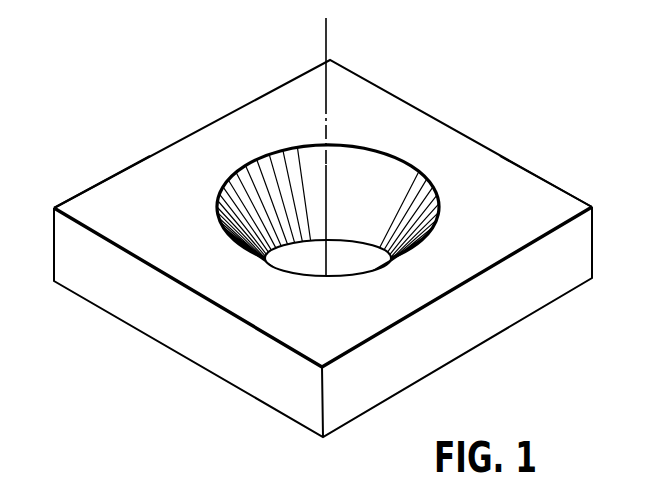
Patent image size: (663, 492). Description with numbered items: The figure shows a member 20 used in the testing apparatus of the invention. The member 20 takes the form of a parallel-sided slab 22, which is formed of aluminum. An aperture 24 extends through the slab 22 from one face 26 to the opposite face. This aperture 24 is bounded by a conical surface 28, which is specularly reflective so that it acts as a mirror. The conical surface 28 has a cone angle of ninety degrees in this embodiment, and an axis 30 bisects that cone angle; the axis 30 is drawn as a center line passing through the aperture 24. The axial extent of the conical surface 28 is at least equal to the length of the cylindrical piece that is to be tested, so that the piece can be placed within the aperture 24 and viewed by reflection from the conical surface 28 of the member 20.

The member 20 is at (466, 132).
The parallel-sided slab 22 is at (112, 207).
The aperture 24 is at (362, 248).
The face 26 is at (521, 217).
The conical surface 28 is at (305, 172).
The axis 30 is at (326, 45).